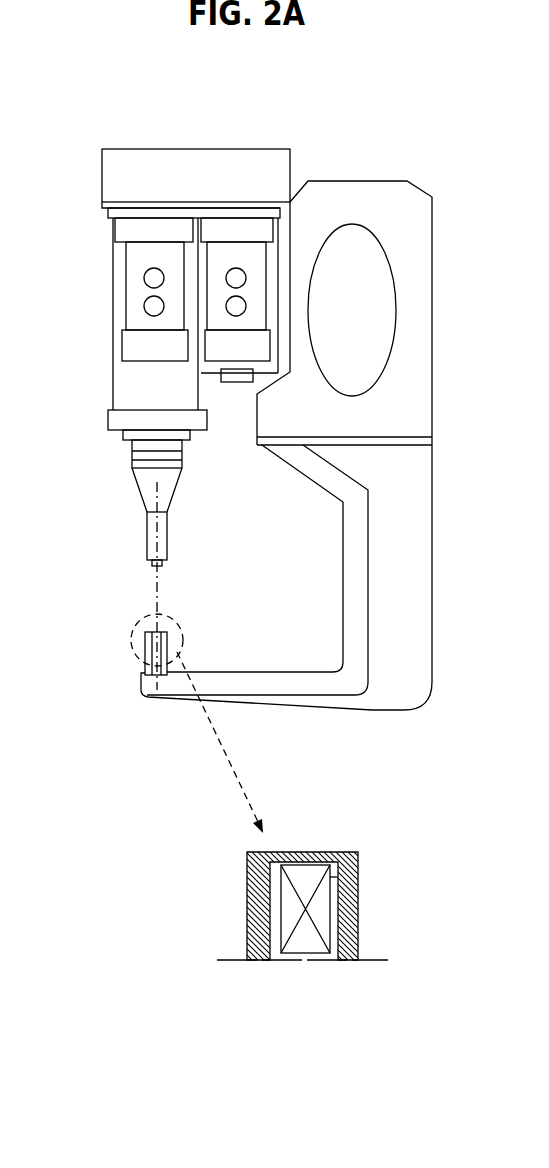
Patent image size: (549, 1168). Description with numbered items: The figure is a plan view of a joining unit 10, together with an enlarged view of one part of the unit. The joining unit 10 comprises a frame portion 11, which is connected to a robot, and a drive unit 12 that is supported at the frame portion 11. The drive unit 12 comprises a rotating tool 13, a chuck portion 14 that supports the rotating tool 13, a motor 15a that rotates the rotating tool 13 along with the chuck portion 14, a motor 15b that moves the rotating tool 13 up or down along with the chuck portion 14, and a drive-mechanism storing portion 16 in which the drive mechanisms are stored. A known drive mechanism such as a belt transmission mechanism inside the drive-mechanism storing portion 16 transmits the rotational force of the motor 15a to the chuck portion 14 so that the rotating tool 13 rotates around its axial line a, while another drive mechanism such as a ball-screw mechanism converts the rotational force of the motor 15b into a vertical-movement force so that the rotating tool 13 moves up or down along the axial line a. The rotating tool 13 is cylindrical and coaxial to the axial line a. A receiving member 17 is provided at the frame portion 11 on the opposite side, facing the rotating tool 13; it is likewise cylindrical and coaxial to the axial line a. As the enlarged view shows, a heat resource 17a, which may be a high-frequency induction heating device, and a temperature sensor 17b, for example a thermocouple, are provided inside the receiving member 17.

The joining unit 10 is at (394, 152).
The frame portion 11 is at (423, 335).
The drive unit 12 is at (94, 138).
The rotating tool 13 is at (162, 535).
The chuck portion 14 is at (168, 488).
The motor 15a is at (130, 287).
The motor 15b is at (260, 260).
The drive-mechanism storing portion 16 is at (193, 157).
The receiving member 17 is at (153, 643).
The heat resource 17a is at (322, 912).
The temperature sensor 17b is at (357, 868).
The axial line a is at (155, 588).